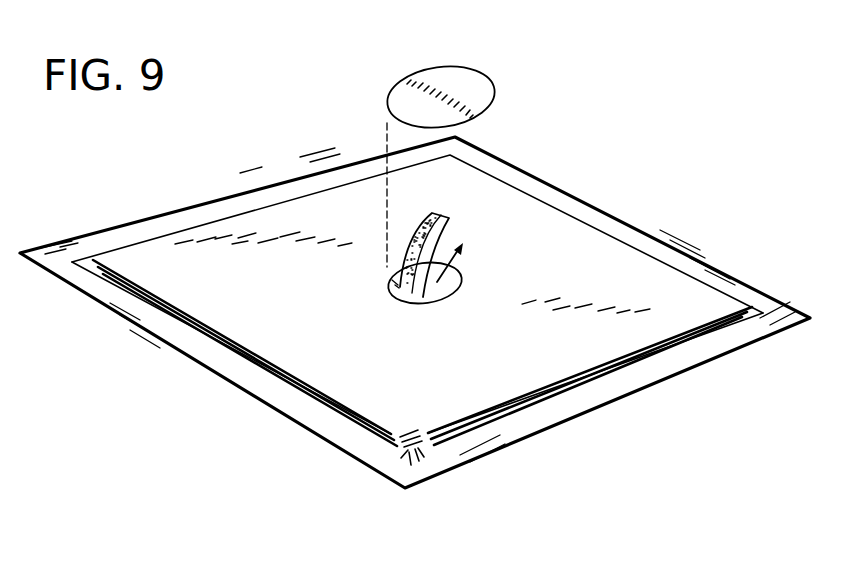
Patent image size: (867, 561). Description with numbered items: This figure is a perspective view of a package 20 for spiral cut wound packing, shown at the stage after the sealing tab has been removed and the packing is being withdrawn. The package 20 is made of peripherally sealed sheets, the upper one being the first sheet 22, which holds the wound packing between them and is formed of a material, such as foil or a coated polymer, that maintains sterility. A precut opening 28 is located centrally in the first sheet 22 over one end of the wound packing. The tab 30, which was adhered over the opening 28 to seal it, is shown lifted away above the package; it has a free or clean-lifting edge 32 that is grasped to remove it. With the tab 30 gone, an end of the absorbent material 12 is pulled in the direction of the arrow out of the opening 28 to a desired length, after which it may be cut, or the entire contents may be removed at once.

The absorbent material 12 is at (440, 212).
The package 20 is at (603, 201).
The first sheet 22 is at (250, 325).
The opening 28 is at (448, 296).
The tab 30 is at (449, 78).
The clean-lifting edge 32 is at (495, 90).